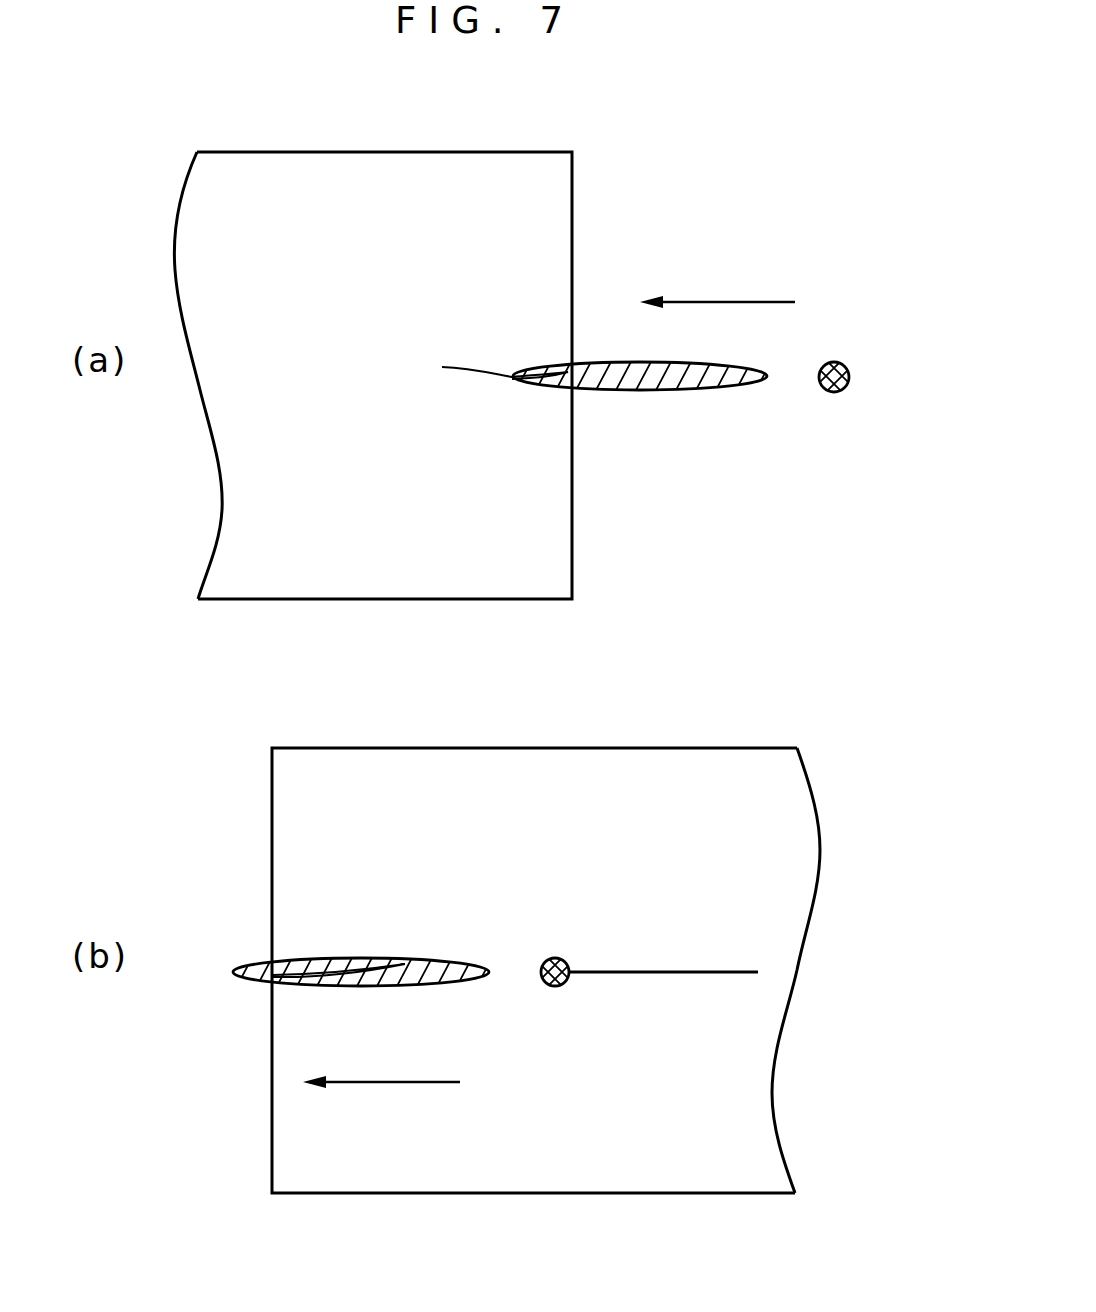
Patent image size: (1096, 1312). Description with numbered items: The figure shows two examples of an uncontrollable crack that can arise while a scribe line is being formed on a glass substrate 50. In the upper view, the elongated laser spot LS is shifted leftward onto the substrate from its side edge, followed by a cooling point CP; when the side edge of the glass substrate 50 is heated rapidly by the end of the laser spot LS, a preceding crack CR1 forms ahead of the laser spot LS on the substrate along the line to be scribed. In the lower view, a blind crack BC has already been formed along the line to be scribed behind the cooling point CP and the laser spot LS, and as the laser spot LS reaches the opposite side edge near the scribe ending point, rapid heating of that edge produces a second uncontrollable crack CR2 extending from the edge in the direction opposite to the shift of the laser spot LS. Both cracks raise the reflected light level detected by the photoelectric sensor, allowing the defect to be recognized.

The glass substrate 50 is at (572, 170).
The preceding crack CR1 is at (467, 366).
The uncontrollable crack CR2 is at (336, 968).
The laser spot LS is at (672, 392).
The cooling point CP is at (556, 957).
The blind crack BC is at (709, 970).